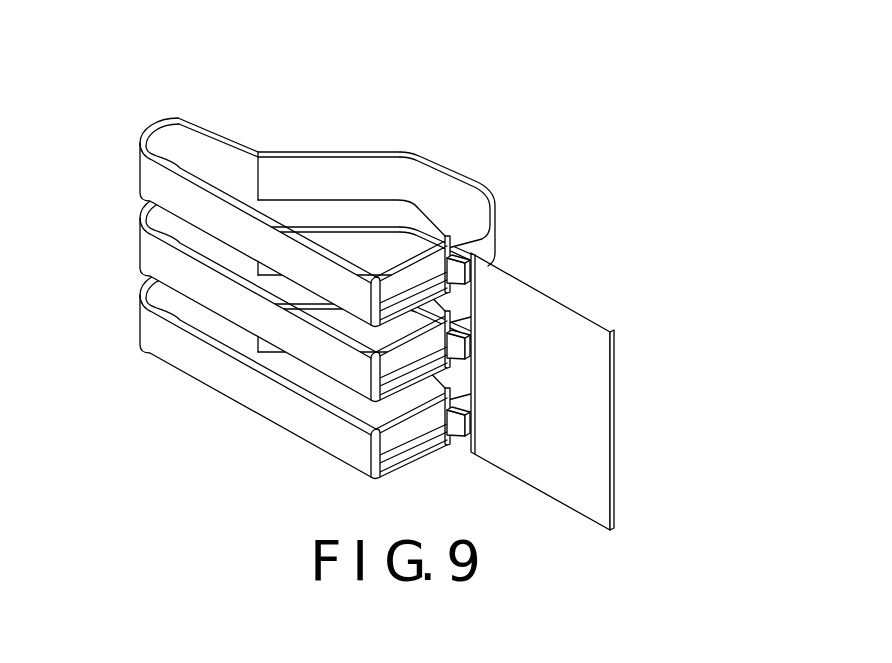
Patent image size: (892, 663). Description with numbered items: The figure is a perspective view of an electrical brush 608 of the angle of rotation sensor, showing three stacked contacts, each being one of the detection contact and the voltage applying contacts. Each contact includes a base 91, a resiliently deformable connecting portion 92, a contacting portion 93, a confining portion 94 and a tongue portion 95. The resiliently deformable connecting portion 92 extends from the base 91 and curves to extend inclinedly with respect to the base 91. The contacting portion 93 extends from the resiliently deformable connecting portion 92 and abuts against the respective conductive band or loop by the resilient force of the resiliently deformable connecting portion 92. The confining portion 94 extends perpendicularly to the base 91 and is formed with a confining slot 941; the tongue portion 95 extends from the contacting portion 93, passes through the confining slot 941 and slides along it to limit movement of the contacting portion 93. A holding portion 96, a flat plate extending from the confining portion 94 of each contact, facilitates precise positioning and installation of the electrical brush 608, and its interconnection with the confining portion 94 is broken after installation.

The electrical brush 608 is at (371, 274).
The base 91 is at (177, 190).
The resiliently deformable connecting portion 92 is at (287, 167).
The contacting portion 93 is at (448, 168).
The confining portion 94 is at (425, 265).
The confining slot 941 is at (398, 290).
The tongue portion 95 is at (455, 274).
The holding portion 96 is at (567, 403).